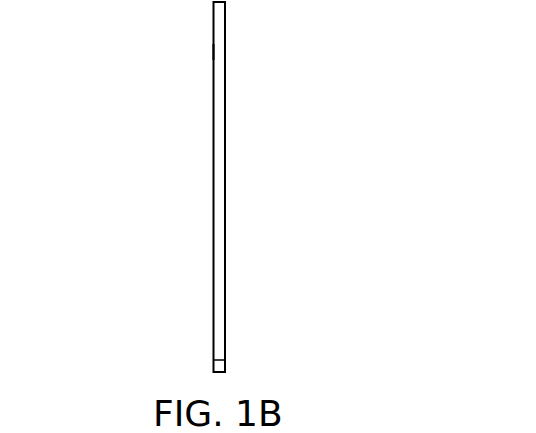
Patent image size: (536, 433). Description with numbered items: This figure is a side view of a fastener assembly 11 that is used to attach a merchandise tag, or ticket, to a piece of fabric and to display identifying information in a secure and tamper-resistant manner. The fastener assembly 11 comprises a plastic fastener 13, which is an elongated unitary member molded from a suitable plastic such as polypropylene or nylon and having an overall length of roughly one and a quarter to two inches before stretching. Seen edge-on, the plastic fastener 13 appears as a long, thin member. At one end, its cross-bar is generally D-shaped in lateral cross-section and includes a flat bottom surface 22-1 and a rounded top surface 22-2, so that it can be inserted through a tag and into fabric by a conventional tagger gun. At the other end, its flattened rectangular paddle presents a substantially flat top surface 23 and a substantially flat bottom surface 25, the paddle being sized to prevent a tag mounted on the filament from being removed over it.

The fastener assembly 11 is at (117, 128).
The plastic fastener 13 is at (225, 241).
The top surface 23 is at (213, 53).
The bottom surface 25 is at (225, 53).
The flat bottom surface 22-1 is at (225, 362).
The rounded top surface 22-2 is at (213, 362).